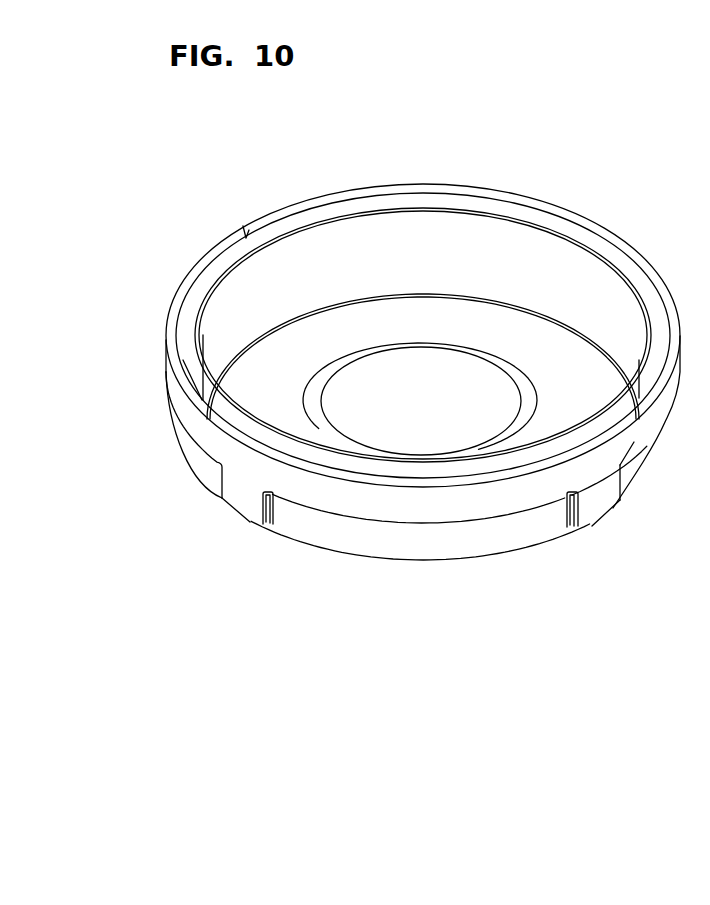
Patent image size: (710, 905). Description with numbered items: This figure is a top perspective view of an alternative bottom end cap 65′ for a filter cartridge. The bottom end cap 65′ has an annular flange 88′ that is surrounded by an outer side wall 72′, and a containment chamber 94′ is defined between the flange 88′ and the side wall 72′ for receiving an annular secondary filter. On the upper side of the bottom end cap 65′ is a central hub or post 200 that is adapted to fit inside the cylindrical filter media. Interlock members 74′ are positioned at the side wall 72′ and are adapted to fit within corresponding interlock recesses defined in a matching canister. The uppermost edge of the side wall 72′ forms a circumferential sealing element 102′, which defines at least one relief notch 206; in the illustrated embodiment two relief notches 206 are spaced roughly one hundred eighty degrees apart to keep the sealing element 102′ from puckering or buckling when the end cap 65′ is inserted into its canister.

The bottom end cap 65′ is at (493, 148).
The outer side wall 72′ is at (203, 468).
The interlock members 74′ is at (243, 503).
The annular flange 88′ is at (383, 209).
The containment chamber 94′ is at (202, 400).
The circumferential sealing element 102′ is at (622, 243).
The central hub 200 is at (435, 376).
The relief notch 206 is at (245, 230).